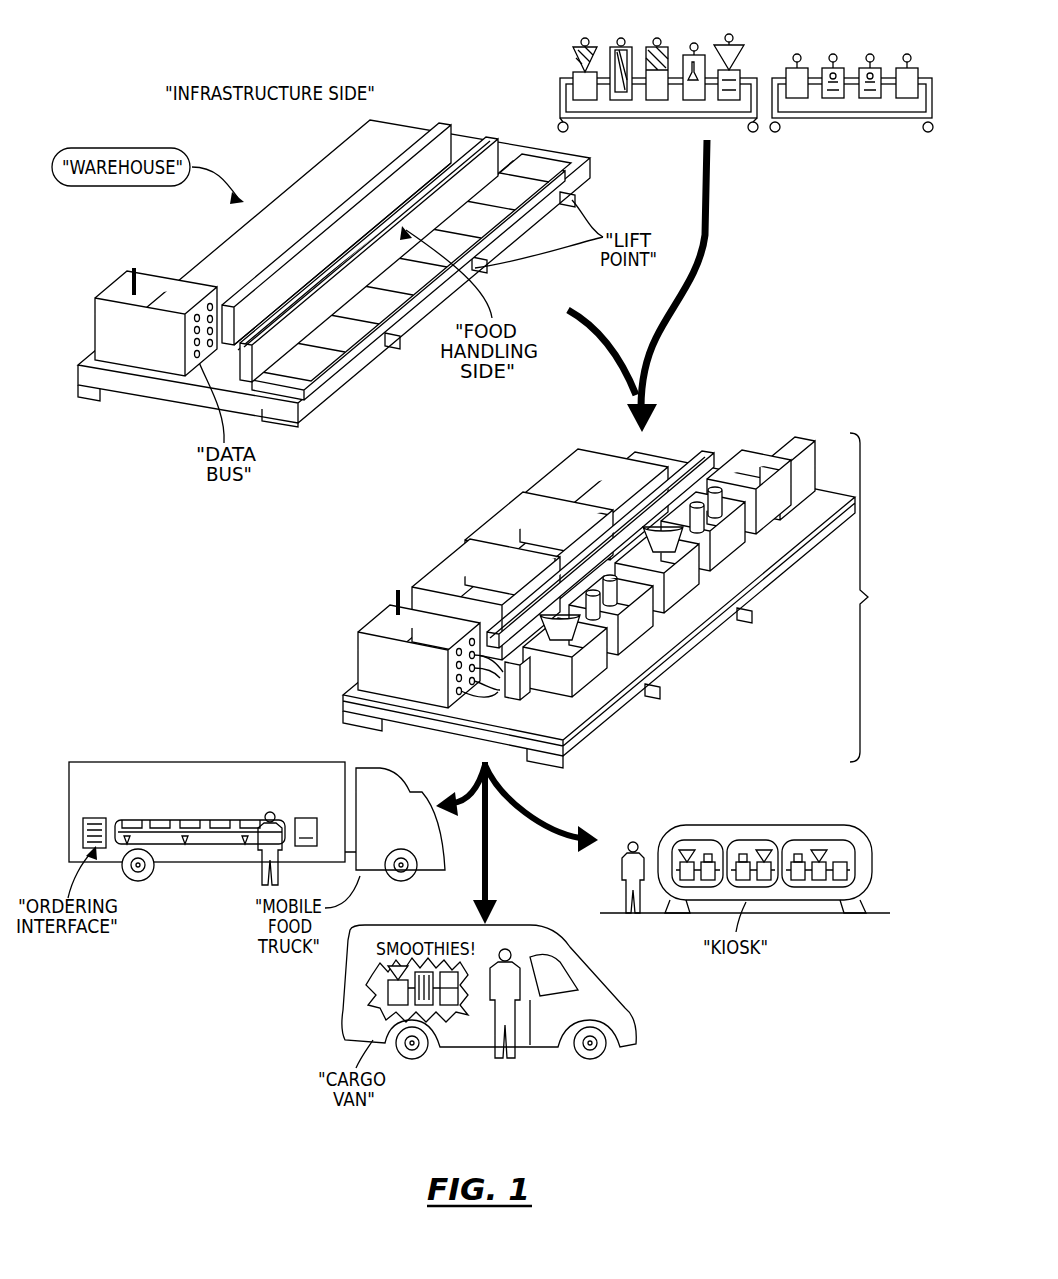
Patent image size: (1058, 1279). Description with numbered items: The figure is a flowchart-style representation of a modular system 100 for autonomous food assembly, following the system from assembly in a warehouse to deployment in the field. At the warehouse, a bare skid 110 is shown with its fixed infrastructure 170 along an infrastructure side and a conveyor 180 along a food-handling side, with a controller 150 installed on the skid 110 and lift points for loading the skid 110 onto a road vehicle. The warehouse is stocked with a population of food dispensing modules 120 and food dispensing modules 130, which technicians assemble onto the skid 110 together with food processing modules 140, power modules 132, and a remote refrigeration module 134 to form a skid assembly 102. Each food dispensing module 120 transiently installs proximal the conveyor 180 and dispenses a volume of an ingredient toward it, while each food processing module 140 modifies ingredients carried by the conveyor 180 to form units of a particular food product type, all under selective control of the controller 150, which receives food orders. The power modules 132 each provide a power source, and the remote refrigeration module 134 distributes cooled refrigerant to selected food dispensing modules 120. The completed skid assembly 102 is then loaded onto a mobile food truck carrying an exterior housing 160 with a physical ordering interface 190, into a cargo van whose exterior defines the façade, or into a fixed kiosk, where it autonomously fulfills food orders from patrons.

The modular system 100 is at (98, 62).
The skid assembly 102 is at (883, 597).
The skid 110 is at (338, 384).
The food dispensing module 120 is at (654, 138).
The food dispensing modules 130 is at (848, 138).
The power module 132 is at (444, 576).
The remote refrigeration module 134 is at (550, 486).
The food processing module 140 is at (728, 487).
The controller 150 is at (95, 300).
The exterior housing 160 is at (112, 756).
The fixed infrastructure 170 is at (176, 293).
The conveyor 180 is at (352, 322).
The ordering interface 190 is at (774, 466).